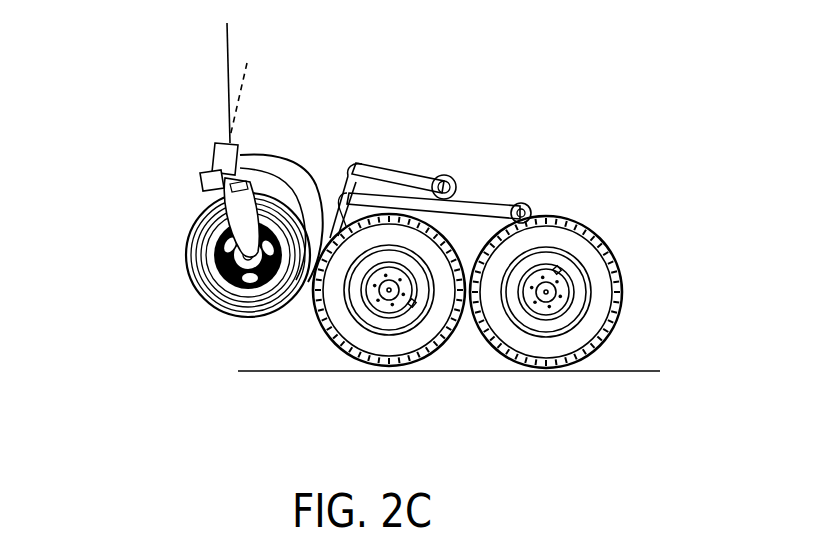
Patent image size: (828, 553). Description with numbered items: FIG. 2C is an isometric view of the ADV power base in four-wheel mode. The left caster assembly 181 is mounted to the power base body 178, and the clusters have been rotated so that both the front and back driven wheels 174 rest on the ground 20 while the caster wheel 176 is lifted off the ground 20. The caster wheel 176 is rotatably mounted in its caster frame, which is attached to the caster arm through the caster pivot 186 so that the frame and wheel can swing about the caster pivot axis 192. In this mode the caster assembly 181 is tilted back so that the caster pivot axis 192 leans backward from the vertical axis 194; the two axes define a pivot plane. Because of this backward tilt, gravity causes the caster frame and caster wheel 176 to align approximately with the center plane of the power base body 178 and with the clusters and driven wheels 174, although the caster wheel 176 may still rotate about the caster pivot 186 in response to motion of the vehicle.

The ground 20 is at (260, 372).
The driven wheels 174 is at (388, 342).
The caster wheel 176 is at (220, 300).
The power base body 178 is at (373, 168).
The left caster assembly 181 is at (342, 116).
The caster pivot 186 is at (225, 157).
The caster pivot axis 192 is at (243, 80).
The vertical axis 194 is at (223, 37).